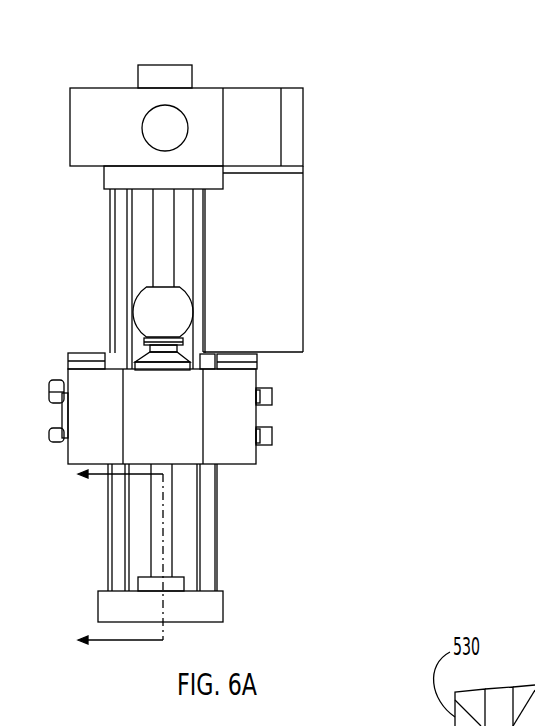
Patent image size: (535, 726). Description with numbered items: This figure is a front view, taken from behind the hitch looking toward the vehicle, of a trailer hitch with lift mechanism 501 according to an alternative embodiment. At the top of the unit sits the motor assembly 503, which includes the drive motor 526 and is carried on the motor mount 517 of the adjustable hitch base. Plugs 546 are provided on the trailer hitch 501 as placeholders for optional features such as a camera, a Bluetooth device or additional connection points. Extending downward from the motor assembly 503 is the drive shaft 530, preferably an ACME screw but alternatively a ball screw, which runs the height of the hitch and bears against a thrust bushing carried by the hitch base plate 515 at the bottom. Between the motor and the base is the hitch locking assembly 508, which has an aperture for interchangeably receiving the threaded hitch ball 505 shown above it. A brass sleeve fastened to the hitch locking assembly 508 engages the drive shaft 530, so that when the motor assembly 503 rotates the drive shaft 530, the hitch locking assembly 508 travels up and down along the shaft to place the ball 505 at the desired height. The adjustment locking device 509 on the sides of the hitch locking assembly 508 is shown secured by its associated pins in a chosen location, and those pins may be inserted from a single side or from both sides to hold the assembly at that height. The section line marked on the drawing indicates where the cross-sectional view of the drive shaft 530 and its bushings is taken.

The trailer hitch with lift mechanism 501 is at (414, 102).
The motor assembly 503 is at (112, 80).
The plugs 546 is at (165, 65).
The drive motor 526 is at (283, 107).
The motor mount 517 is at (103, 178).
The drive shaft 530 is at (176, 248).
The threaded hitch ball 505 is at (195, 317).
The hitch locking assembly 508 is at (207, 419).
The adjustment locking device 509 is at (273, 394).
The hitch base plate 515 is at (223, 607).